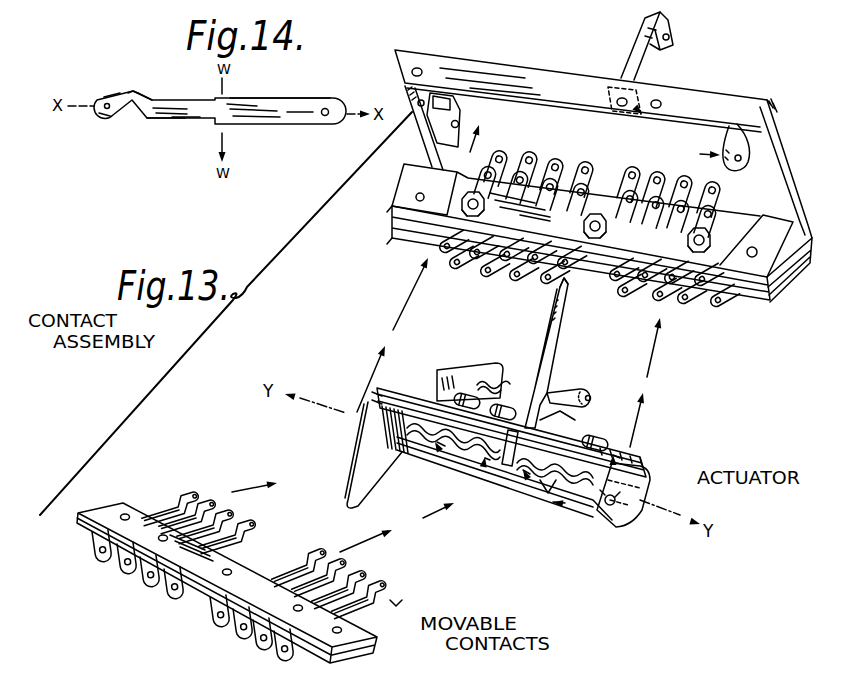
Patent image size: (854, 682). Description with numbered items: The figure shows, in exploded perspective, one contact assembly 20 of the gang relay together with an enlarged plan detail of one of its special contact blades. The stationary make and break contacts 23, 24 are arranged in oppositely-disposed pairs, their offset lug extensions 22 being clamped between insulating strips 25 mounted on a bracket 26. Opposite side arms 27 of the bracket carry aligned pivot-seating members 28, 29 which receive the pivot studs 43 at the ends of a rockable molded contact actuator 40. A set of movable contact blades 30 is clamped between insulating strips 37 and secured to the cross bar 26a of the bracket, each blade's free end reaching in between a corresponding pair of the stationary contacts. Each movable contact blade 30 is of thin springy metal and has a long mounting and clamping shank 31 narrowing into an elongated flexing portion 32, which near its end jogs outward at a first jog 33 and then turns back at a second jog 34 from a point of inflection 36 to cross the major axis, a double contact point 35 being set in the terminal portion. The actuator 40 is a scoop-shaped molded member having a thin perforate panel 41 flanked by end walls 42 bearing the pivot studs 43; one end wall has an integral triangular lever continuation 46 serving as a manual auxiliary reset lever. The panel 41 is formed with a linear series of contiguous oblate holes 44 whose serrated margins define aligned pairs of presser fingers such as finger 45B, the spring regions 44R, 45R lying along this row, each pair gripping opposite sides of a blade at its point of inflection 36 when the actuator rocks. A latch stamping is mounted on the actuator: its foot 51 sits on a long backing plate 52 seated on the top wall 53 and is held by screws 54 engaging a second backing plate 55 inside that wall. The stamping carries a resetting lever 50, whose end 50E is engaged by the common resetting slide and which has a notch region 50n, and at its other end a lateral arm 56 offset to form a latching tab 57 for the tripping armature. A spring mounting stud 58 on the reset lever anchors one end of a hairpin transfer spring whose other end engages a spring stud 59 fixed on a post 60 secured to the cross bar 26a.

In FIG. 13, the contact assembly 20 is at (168, 372).
In FIG. 13, the lug extensions 22 is at (505, 274).
In FIG. 13, the stationary make contact 23 is at (557, 160).
In FIG. 13, the stationary break contact 24 is at (537, 195).
In FIG. 13, the insulating strips 25 is at (400, 241).
In FIG. 13, the bracket 26 is at (600, 71).
In FIG. 13, the cross bar 26a is at (590, 102).
In FIG. 13, the side arms 27 is at (437, 147).
In FIG. 13, the pivot-seating member 28 is at (461, 112).
In FIG. 13, the pivot-seating member 29 is at (727, 140).
In FIG. 14, the movable contact blade 30 is at (165, 152).
In FIG. 13, the movable contact blade 30 is at (254, 531).
In FIG. 14, the mounting and clamping shank 31 is at (293, 110).
In FIG. 14, the flexing portion 32 is at (166, 118).
In FIG. 14, the first jog 33 is at (144, 94).
In FIG. 14, the second jog 34 is at (117, 94).
In FIG. 14, the contact point 35 is at (106, 114).
In FIG. 14, the point of inflection 36 is at (129, 88).
In FIG. 13, the point of inflection 36 is at (398, 597).
In FIG. 13, the insulating strips 37 is at (377, 640).
In FIG. 13, the contact actuator 40 is at (672, 450).
In FIG. 13, the perforate panel 41 is at (541, 497).
In FIG. 13, the end walls 42 is at (655, 470).
In FIG. 13, the pivot studs 43 is at (363, 420).
In FIG. 13, the oblate holes 44 is at (492, 470).
In FIG. 13, the return spring 44R is at (477, 463).
In FIG. 13, the return spring 45R is at (545, 477).
In FIG. 13, the contact presser finger 45B is at (557, 481).
In FIG. 13, the lever continuation 46 is at (375, 471).
In FIG. 13, the resetting lever 50 is at (556, 354).
In FIG. 13, the end of resetting lever 50E is at (558, 290).
In FIG. 13, the lever notch 50n is at (562, 412).
In FIG. 13, the foot 51 is at (510, 405).
In FIG. 13, the backing plate 52 is at (384, 397).
In FIG. 13, the top wall 53 is at (377, 398).
In FIG. 13, the screws 54 is at (616, 442).
In FIG. 13, the second backing plate 55 is at (373, 400).
In FIG. 13, the lateral arm 56 is at (475, 371).
In FIG. 13, the latching tab 57 is at (494, 382).
In FIG. 13, the spring mounting stud 58 is at (575, 389).
In FIG. 13, the spring stud 59 is at (644, 42).
In FIG. 13, the post 60 is at (667, 46).